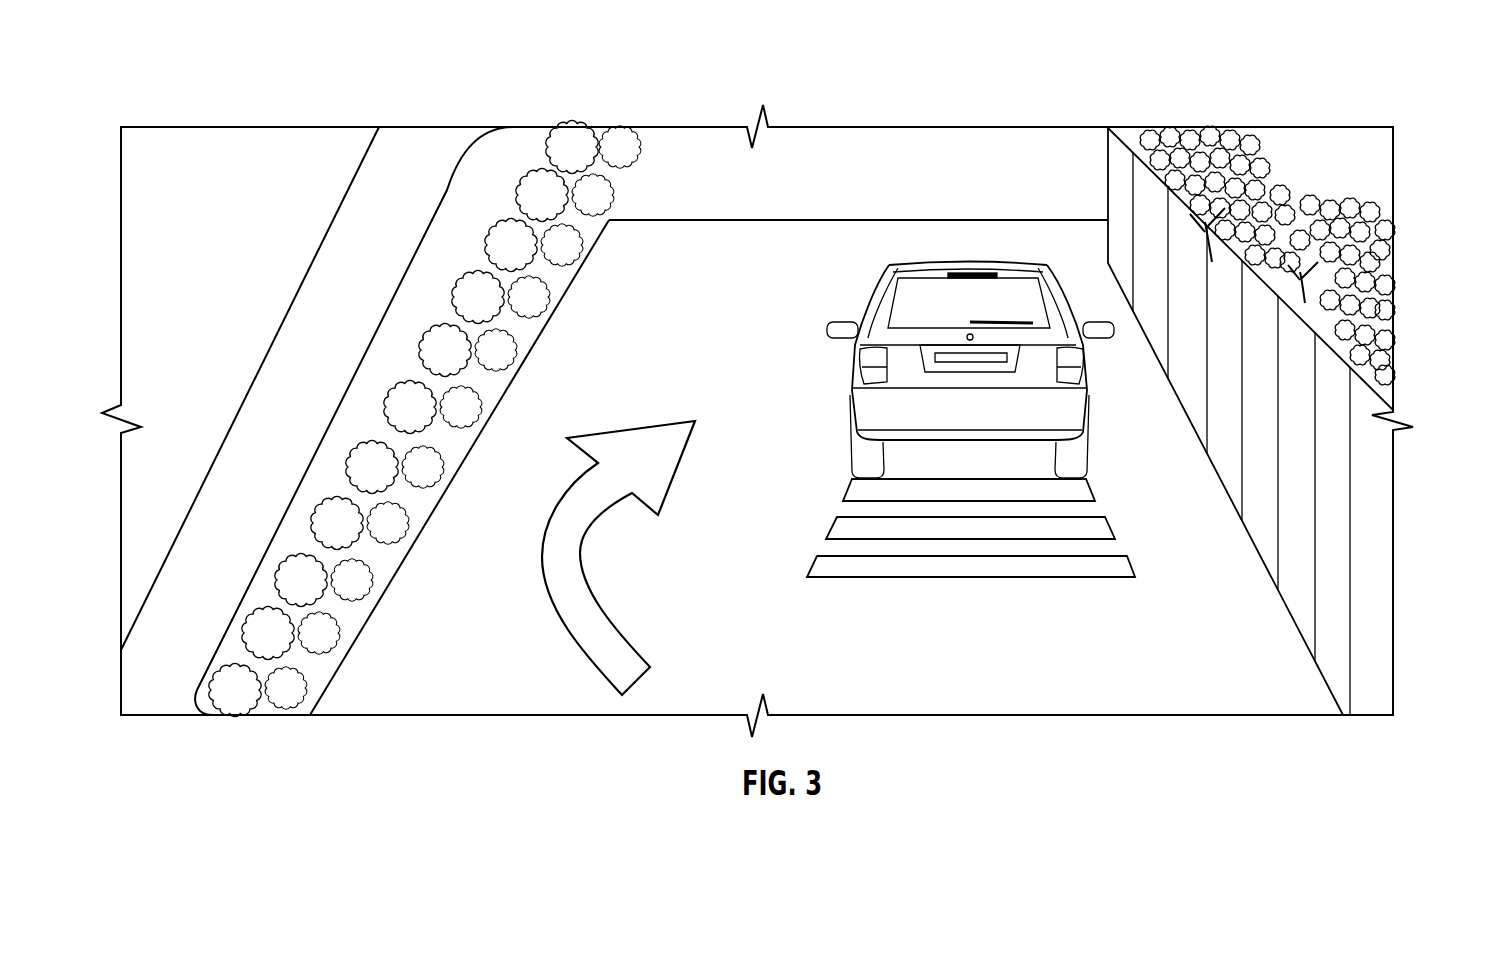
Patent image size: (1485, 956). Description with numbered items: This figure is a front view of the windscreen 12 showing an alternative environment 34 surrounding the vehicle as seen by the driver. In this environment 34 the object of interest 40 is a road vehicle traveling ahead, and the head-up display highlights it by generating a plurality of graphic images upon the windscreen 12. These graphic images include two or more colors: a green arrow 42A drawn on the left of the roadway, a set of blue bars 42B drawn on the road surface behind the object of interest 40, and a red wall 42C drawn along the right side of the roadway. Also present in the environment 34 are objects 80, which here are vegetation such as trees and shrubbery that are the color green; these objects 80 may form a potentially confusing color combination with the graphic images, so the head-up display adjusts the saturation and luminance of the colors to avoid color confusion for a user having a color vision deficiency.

The windscreen 12 is at (834, 197).
The environment 34 is at (685, 347).
The object of interest 40 is at (977, 262).
The green arrow 42A is at (547, 592).
The set of blue bars 42B is at (985, 566).
The red wall 42C is at (1337, 483).
The objects 80 is at (600, 145).